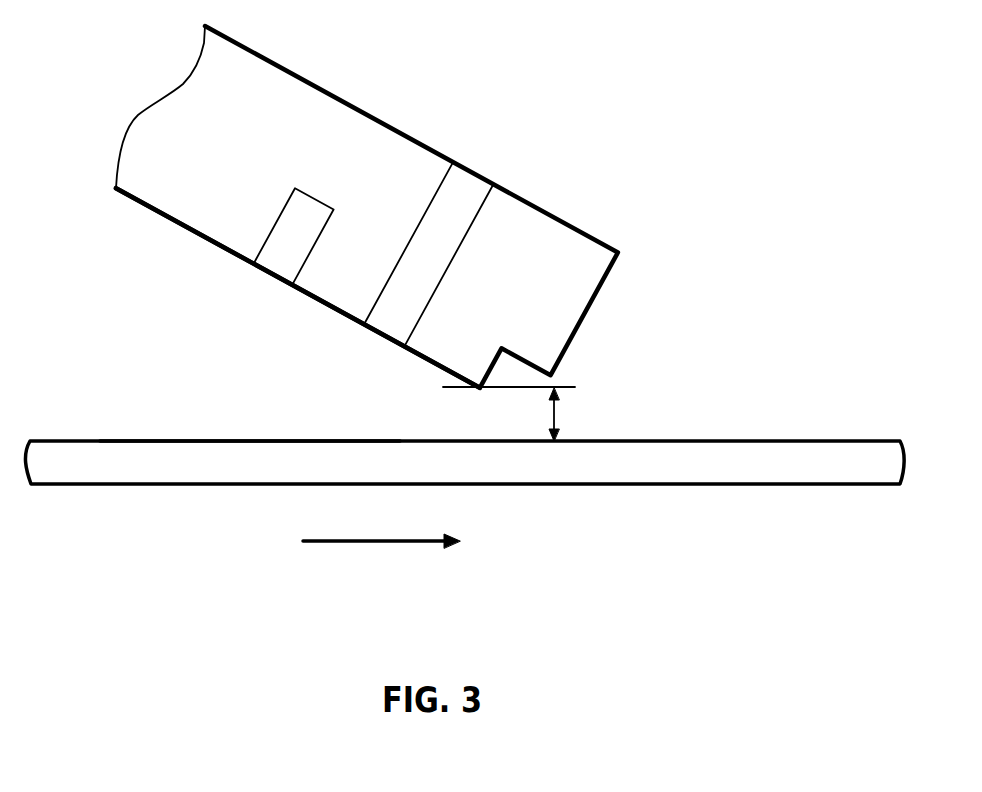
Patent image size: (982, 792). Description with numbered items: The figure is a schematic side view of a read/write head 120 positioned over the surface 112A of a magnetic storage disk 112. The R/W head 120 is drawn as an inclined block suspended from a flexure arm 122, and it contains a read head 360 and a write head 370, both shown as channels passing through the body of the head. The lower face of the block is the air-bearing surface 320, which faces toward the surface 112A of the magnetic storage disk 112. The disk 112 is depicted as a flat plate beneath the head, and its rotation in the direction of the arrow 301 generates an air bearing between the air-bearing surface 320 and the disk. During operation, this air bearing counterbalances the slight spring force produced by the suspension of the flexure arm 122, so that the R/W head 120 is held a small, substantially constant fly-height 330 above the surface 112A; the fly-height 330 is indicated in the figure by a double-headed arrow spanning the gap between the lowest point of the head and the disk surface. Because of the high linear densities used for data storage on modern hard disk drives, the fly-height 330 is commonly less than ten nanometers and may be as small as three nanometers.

The R/W head 120 is at (702, 94).
The flexure arm 122 is at (295, 72).
The air-bearing surface 320 is at (190, 233).
The read head 360 is at (285, 260).
The write head 370 is at (462, 190).
The magnetic storage disk 112 is at (774, 475).
The surface of magnetic storage disk 112A is at (162, 440).
The fly-height 330 is at (556, 413).
The arrow 301 is at (363, 541).